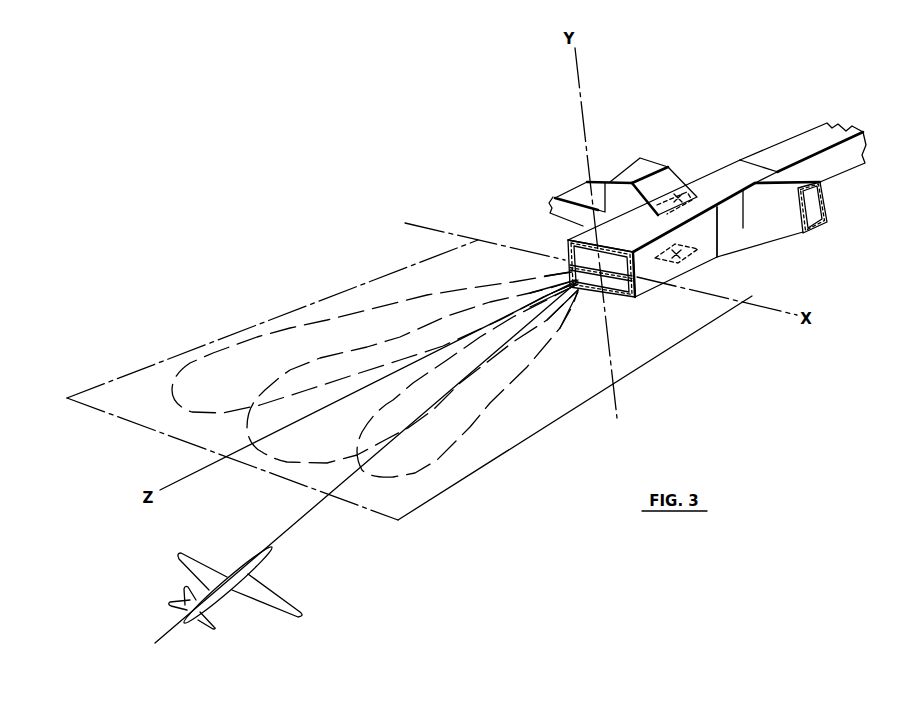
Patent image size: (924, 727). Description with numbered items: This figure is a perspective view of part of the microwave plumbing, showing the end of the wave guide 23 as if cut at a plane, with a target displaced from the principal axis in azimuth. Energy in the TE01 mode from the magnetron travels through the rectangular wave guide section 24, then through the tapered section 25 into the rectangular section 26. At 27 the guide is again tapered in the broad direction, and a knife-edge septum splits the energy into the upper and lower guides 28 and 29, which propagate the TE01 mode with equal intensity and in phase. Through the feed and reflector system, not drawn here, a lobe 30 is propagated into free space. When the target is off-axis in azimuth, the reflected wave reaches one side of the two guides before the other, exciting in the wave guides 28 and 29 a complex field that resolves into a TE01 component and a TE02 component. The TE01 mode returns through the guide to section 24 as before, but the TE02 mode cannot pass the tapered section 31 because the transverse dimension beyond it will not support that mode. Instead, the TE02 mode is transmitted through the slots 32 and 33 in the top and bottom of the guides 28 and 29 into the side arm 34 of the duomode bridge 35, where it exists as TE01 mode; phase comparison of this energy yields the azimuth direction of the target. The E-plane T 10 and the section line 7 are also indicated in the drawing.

The section line 7- 7 is at (550, 222).
The E-plane T 10 is at (606, 190).
The wave guide 23 is at (578, 233).
The rectangular wave guide section 24 is at (863, 162).
The tapered section 25 is at (765, 157).
The rectangular section 26 is at (728, 173).
The tapered portion of the guide 27 is at (750, 222).
The upper guide 28 is at (613, 256).
The lower guide 29 is at (617, 298).
The lobe 30 is at (352, 343).
The tapered section 31 is at (729, 233).
The slot 32 is at (683, 180).
The slot 33 is at (683, 262).
The side arm 34 is at (587, 192).
The duomode bridge 35 is at (643, 168).